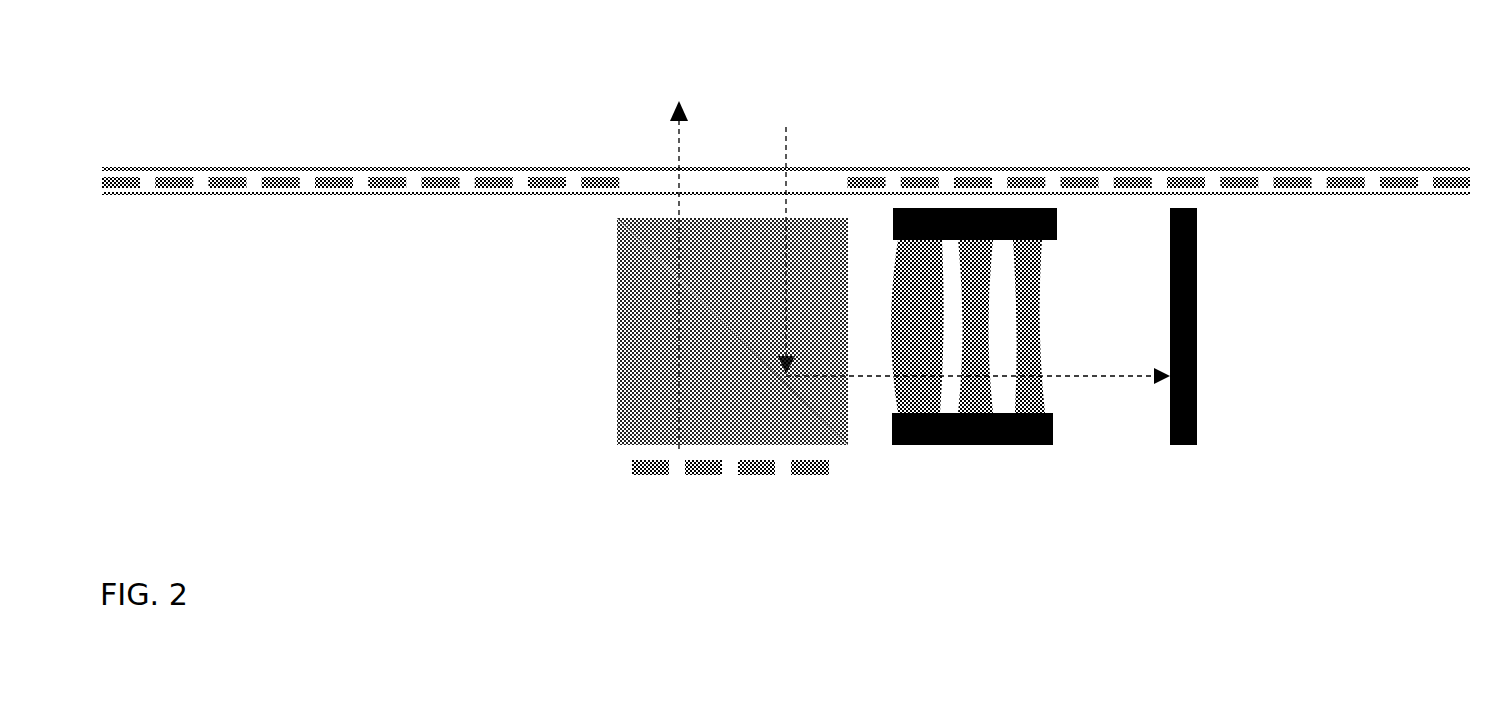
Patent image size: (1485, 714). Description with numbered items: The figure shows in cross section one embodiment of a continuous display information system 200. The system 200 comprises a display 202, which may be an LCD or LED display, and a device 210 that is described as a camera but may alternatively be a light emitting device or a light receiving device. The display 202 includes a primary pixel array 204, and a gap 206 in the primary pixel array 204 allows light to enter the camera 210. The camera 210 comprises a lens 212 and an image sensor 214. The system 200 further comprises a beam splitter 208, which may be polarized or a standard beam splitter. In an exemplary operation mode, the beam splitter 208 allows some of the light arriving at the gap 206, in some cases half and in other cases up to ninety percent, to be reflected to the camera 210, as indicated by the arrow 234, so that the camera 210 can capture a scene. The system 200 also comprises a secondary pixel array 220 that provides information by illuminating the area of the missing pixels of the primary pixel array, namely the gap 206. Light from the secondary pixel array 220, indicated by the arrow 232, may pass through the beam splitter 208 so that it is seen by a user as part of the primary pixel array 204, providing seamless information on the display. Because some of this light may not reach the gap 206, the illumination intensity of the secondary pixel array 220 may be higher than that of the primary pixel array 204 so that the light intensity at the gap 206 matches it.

The continuous display information system 200 is at (273, 66).
The display 202 is at (280, 169).
The primary pixel array 204 is at (387, 192).
The gap 206 is at (728, 180).
The beam splitter 208 is at (633, 413).
The device (camera) 210 is at (1055, 373).
The lens 212 is at (995, 282).
The image sensor 214 is at (1203, 342).
The secondary pixel array 220 is at (627, 465).
The arrow indicating light from secondary pixel array 232 is at (678, 332).
The arrow indicating light reflected to camera 234 is at (788, 140).